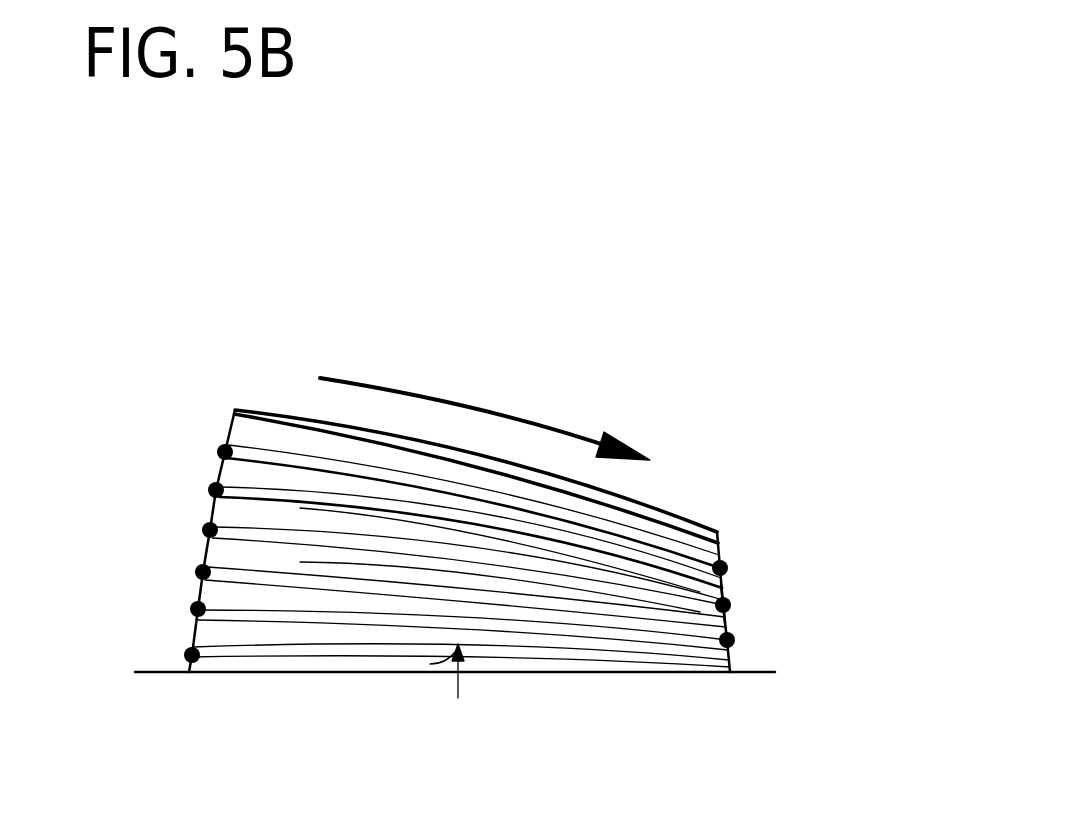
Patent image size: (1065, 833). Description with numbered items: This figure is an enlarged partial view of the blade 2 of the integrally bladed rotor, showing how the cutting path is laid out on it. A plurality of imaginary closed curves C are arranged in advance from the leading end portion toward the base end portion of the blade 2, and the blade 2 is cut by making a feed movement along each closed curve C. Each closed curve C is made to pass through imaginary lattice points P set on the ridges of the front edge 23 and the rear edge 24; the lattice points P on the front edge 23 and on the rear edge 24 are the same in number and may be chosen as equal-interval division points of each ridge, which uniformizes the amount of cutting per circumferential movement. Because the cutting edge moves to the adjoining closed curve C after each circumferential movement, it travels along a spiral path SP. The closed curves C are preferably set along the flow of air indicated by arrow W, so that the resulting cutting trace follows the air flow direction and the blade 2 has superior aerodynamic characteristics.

The blade 2 is at (665, 510).
The spiral path SP is at (650, 565).
The front edge 23 is at (200, 593).
The rear edge 24 is at (717, 532).
The closed curve C is at (730, 625).
The lattice point P is at (217, 490).
The arrow indicating flow of air W is at (485, 387).